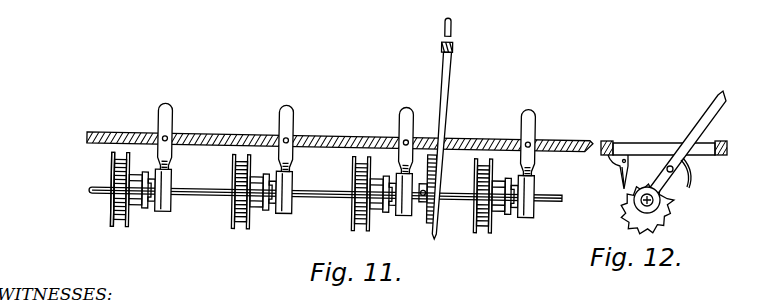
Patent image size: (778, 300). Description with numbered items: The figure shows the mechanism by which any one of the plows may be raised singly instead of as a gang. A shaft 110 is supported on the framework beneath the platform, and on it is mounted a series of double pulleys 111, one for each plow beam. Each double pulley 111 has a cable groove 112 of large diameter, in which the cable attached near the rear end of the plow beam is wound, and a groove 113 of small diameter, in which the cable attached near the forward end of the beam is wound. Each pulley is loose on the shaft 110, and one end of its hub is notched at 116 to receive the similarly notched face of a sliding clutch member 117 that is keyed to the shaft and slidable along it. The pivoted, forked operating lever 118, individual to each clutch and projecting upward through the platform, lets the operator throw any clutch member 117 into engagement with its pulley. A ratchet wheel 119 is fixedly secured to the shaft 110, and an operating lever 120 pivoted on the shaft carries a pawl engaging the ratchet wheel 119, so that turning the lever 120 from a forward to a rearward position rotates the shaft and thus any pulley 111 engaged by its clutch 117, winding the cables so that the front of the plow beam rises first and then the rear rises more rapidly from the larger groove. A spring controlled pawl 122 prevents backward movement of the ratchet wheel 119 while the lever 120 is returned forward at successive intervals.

In FIG. 11, the shaft 110 is at (203, 194).
In FIG. 11, the double pulley 111 is at (100, 195).
In FIG. 11, the cable groove of large diameter 112 is at (117, 228).
In FIG. 11, the groove of small diameter 113 is at (133, 207).
In FIG. 11, the notched hub end 116 is at (146, 170).
In FIG. 11, the sliding clutch member 117 is at (157, 186).
In FIG. 11, the operating lever 118 is at (172, 107).
In FIG. 11, the ratchet wheel 119 is at (432, 223).
In FIG. 12, the ratchet wheel 119 is at (620, 207).
In FIG. 11, the operating lever 120 is at (449, 102).
In FIG. 12, the operating lever 120 is at (703, 116).
In FIG. 12, the spring controlled pawl 122 is at (613, 175).